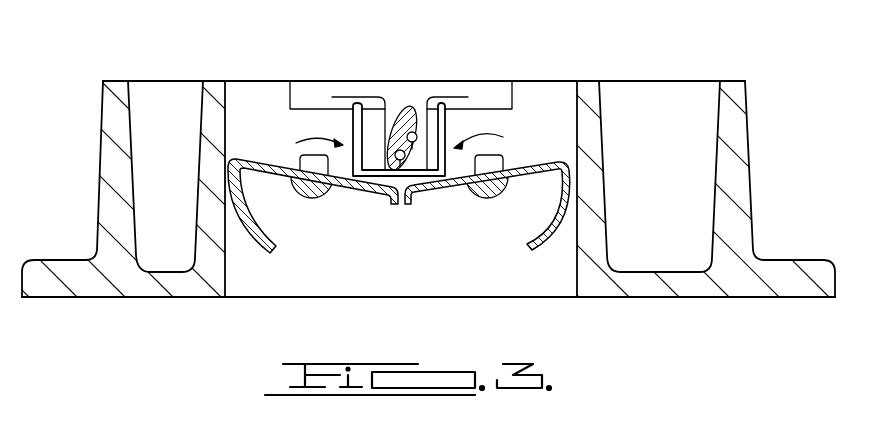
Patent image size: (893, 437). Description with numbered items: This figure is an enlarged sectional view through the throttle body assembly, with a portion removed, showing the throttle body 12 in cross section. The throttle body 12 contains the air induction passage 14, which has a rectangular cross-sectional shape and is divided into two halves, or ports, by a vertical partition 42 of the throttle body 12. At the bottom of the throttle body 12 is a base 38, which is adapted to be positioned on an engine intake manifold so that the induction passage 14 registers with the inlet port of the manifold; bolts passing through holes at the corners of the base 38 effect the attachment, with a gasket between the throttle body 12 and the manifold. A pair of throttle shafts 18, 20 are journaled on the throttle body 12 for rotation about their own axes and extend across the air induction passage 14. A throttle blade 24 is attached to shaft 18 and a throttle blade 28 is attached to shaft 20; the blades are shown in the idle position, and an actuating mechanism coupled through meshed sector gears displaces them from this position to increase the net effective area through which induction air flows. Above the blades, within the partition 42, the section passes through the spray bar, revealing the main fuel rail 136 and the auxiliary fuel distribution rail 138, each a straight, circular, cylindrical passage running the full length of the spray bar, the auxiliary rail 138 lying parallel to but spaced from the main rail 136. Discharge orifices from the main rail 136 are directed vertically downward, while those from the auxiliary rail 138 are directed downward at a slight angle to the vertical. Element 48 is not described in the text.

The throttle body 12 is at (748, 80).
The air induction passage 14 is at (227, 105).
The throttle shaft 18 is at (493, 200).
The throttle shaft 20 is at (317, 199).
The throttle blade 24 is at (437, 197).
The throttle blade 28 is at (364, 195).
The base 38 is at (62, 296).
The vertical partition 42 is at (538, 103).
The cover plate 48 is at (482, 80).
The main fuel rail 136 is at (395, 110).
The auxiliary fuel distribution rail 138 is at (412, 108).